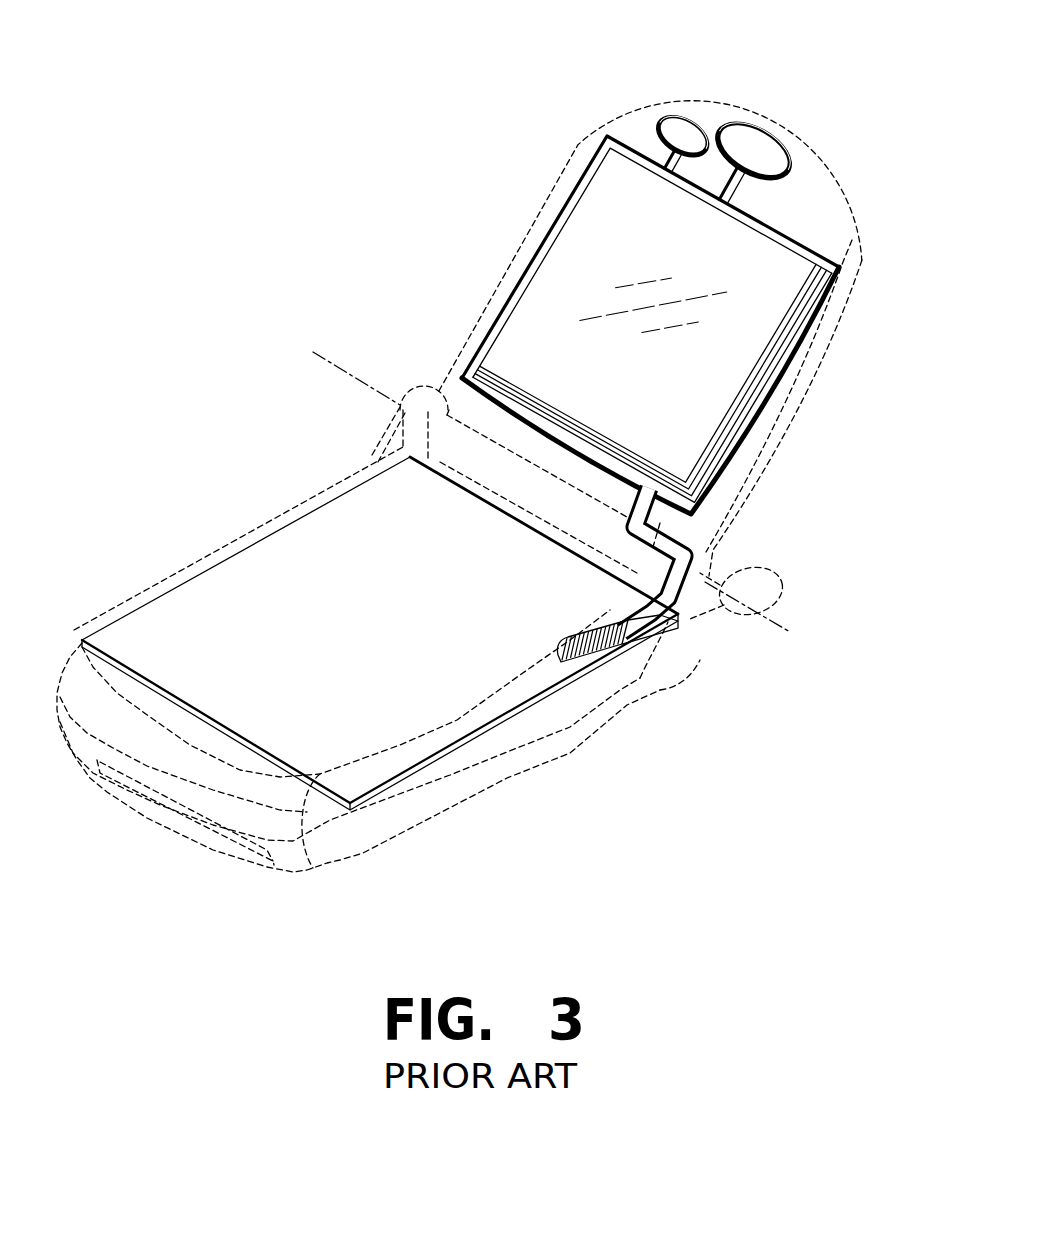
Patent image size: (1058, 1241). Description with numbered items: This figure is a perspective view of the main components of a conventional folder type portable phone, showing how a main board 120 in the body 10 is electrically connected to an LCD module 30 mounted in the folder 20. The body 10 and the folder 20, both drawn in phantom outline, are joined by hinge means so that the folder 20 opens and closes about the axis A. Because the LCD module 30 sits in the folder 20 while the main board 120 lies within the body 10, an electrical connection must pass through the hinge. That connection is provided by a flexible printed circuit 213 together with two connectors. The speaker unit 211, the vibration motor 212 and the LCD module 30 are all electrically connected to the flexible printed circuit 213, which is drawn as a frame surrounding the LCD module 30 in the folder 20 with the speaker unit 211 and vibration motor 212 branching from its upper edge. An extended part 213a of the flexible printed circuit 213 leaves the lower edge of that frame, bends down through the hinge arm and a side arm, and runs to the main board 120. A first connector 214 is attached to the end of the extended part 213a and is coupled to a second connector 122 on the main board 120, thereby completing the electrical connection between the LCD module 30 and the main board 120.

The body 10 is at (288, 491).
The folder 20 is at (535, 197).
The LCD module 30 is at (766, 254).
The main board 120 is at (193, 604).
The second connector 122 is at (637, 641).
The speaker unit 211 is at (745, 140).
The vibration motor 212 is at (672, 130).
The flexible printed circuit 213 is at (833, 300).
The extended part 213a is at (682, 598).
The first connector 214 is at (572, 643).
The axis A is at (781, 636).